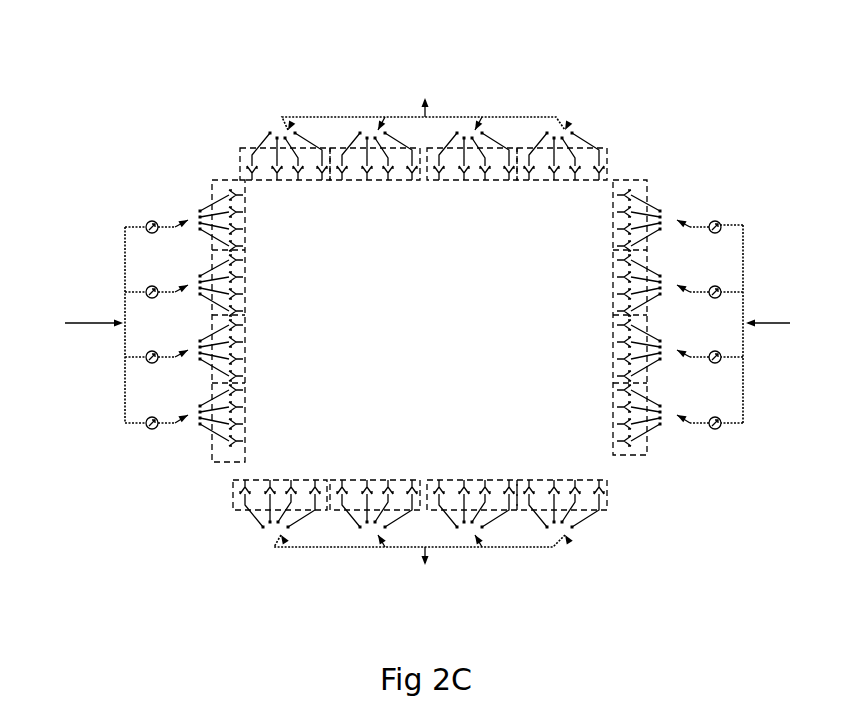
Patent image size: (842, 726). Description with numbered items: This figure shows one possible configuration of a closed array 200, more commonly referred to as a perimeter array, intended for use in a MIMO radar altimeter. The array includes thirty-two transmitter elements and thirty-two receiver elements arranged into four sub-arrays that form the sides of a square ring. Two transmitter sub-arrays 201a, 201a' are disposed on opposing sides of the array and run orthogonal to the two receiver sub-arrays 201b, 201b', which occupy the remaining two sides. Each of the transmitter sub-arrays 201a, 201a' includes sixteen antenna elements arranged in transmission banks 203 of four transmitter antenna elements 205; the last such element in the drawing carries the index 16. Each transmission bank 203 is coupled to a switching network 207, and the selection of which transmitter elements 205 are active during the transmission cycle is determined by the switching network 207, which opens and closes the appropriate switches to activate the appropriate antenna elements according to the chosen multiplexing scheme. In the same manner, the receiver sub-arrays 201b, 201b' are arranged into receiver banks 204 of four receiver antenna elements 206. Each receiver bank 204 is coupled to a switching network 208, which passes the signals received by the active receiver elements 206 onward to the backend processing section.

The closed array 200 is at (426, 436).
The transmitter sub-array 201a is at (768, 331).
The transmitter sub-array 201a' is at (79, 325).
The receiver sub-array 201b is at (423, 74).
The receiver sub-array 201b' is at (419, 581).
The transmission bank 203 is at (213, 180).
The receiver bank 204 is at (242, 148).
The transmitter antenna element 205 is at (245, 245).
The receiver antenna element 206 is at (273, 182).
The switching network 207 is at (188, 222).
The switching network 208 is at (272, 128).
The antenna element 16 is at (243, 444).